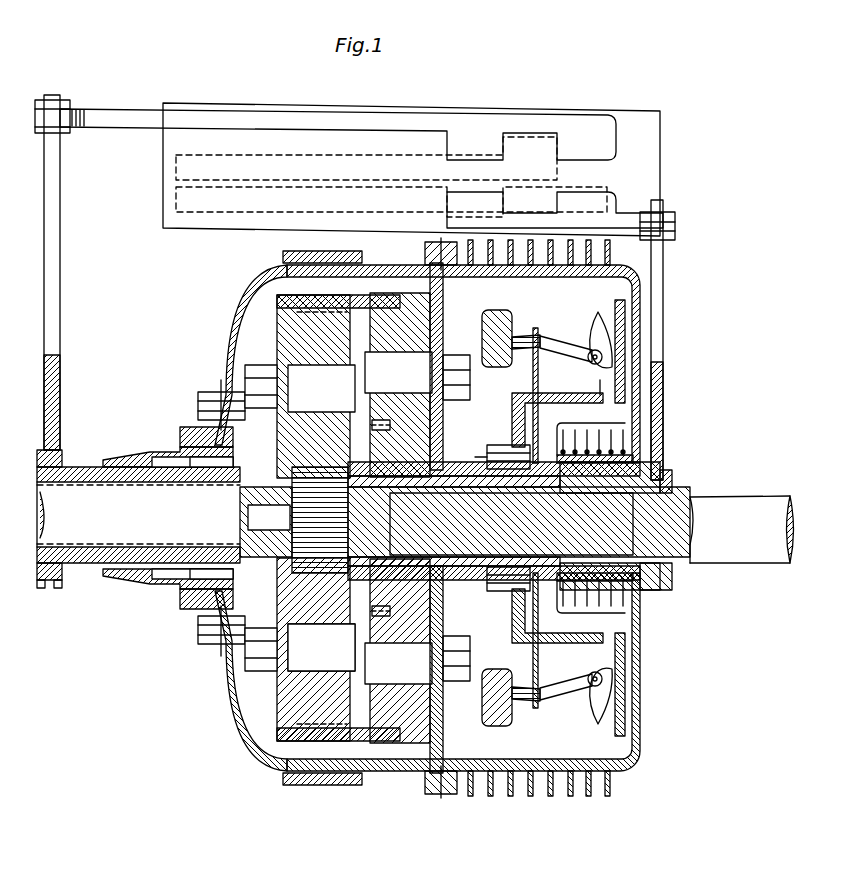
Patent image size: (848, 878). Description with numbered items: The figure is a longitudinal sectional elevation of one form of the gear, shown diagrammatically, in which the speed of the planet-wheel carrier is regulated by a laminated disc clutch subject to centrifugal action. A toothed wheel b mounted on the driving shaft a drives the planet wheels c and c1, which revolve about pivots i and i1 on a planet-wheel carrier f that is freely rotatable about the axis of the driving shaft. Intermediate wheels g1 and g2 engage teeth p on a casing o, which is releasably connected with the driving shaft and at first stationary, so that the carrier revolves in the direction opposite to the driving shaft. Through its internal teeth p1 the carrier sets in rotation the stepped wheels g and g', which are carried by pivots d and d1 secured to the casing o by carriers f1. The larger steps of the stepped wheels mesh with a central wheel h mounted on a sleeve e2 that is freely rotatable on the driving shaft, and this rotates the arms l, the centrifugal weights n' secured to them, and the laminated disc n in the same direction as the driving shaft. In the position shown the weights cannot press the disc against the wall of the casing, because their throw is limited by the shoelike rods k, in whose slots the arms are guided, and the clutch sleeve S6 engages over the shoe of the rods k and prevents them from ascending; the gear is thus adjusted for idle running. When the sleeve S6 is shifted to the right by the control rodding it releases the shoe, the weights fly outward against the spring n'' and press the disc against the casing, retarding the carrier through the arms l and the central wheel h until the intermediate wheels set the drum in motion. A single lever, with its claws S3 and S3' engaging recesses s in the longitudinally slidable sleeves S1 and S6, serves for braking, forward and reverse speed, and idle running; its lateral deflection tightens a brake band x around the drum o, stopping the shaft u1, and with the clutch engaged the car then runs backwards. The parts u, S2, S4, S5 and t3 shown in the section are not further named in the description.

The claw S3 is at (69, 281).
The upper control lever bar S5 is at (447, 124).
The lower control lever bar S4 is at (456, 212).
The control plate t3 is at (660, 118).
The claw S3' is at (668, 340).
The intermediate wheel g1 is at (292, 286).
The intermediate wheel g2 is at (278, 764).
The brake band x is at (310, 253).
The casing o is at (260, 278).
The planet-wheel carrier f is at (243, 376).
The planet wheel c is at (300, 336).
The pivot i is at (321, 388).
The teeth p is at (335, 291).
The internal teeth p1 is at (350, 314).
The pivot d is at (398, 385).
The stepped wheel g' is at (382, 518).
The carrier f1 is at (443, 420).
The stepped wheel g is at (494, 523).
The central wheel h is at (398, 468).
The toothed wheel b is at (491, 520).
The gear hub u is at (266, 522).
The shaft u1 is at (138, 515).
The bearings S2 is at (212, 468).
The driving shaft a is at (467, 592).
The sleeve S1 is at (660, 470).
The clutch sleeve S6 is at (672, 480).
The recess s is at (41, 588).
The centrifugal weight n' is at (537, 326).
The laminated disc n is at (604, 345).
The shoelike rod k is at (533, 377).
The arm l is at (512, 420).
The spring n'' is at (593, 432).
The sleeve e2 is at (488, 458).
The pivot i1 is at (321, 647).
The planet wheel c1 is at (300, 700).
The pivot d1 is at (417, 666).